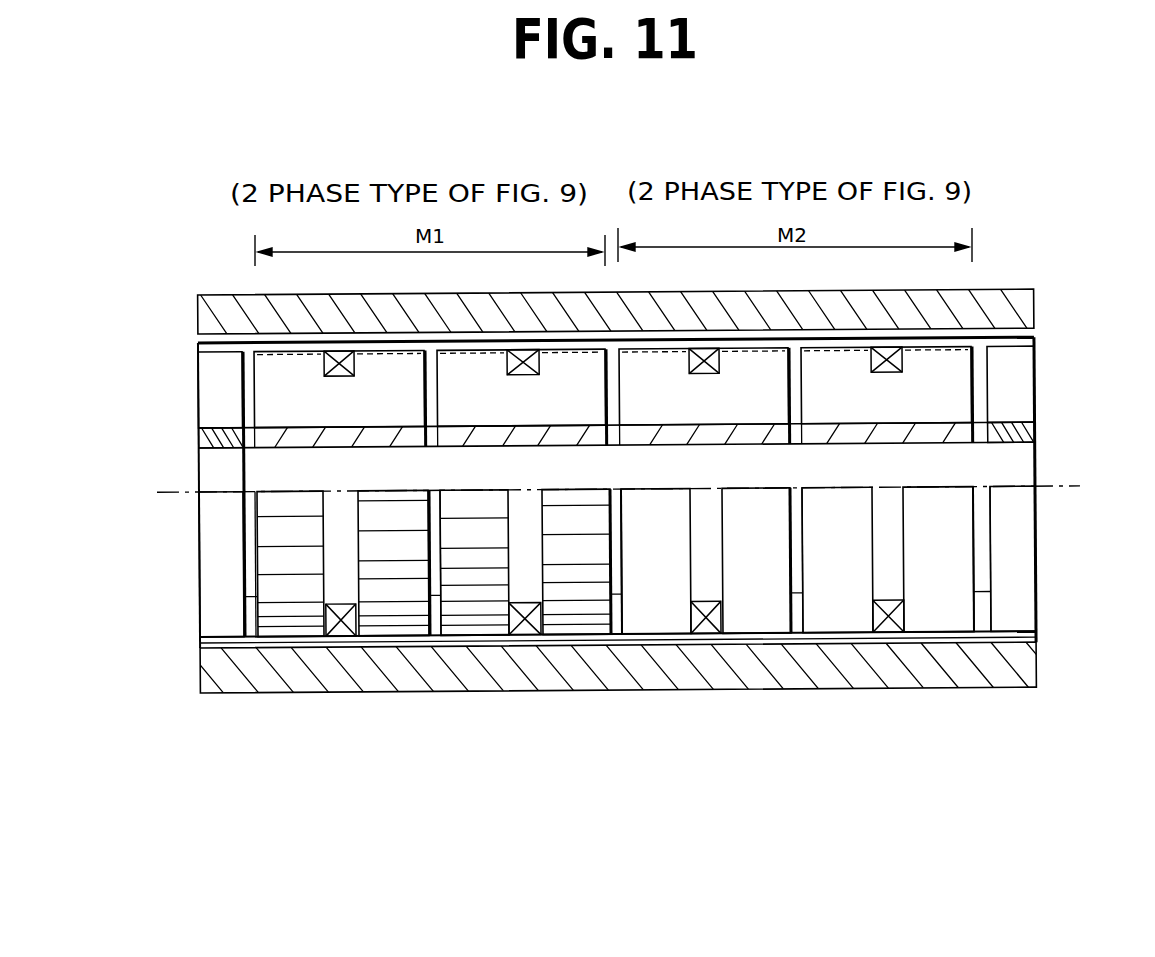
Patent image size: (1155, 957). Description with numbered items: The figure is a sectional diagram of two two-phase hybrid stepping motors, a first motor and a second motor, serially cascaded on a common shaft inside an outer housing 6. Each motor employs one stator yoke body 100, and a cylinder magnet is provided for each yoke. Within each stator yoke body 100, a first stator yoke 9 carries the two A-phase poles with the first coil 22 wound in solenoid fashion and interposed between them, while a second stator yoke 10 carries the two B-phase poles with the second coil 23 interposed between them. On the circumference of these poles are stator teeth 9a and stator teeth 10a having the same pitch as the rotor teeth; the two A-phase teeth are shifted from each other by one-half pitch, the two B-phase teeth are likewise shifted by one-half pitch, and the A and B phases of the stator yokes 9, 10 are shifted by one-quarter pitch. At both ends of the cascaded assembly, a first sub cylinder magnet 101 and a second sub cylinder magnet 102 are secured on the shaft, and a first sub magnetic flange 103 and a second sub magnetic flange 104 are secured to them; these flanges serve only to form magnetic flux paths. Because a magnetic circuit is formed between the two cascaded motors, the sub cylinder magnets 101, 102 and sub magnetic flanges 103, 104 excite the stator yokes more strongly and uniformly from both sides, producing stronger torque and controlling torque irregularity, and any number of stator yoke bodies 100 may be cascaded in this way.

The housing 6 is at (1000, 291).
The stator yoke body 100 is at (613, 154).
The first coil 22 is at (340, 349).
The second coil 23 is at (522, 349).
The first sub magnetic flange 103 is at (215, 386).
The second sub magnetic flange 104 is at (1020, 388).
The first sub cylinder magnet 101 is at (210, 440).
The second sub cylinder magnet 102 is at (1032, 426).
The first stator yoke 9 is at (252, 630).
The stator teeth 9a is at (298, 603).
The second stator yoke 10 is at (612, 615).
The stator teeth 10a is at (548, 602).